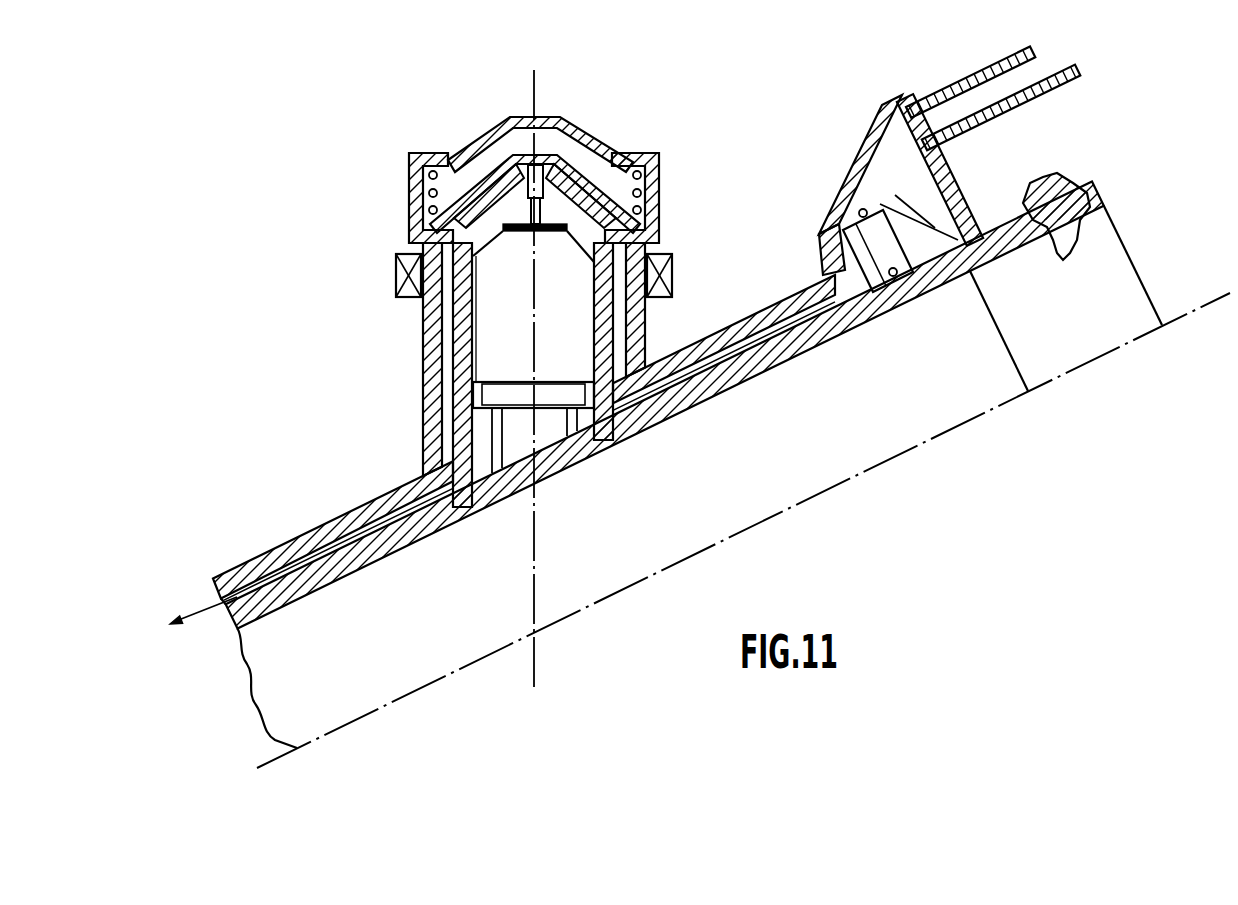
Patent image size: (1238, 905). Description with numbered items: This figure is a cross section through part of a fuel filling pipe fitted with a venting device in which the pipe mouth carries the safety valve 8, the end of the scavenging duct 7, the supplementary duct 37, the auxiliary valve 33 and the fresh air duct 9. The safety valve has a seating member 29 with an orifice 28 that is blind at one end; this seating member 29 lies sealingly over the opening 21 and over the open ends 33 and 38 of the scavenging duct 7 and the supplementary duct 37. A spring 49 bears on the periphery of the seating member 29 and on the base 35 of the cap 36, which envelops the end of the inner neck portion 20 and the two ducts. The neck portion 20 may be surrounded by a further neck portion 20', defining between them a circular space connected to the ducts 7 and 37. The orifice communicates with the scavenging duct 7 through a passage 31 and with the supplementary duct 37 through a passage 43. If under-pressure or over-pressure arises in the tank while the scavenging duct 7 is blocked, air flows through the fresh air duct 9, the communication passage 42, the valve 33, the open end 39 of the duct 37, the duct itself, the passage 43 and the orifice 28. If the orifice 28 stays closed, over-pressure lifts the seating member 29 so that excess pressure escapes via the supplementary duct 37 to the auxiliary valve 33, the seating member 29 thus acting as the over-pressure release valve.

The scavenging duct 7 is at (323, 522).
The safety valve 8 is at (662, 334).
The fresh air duct 9 is at (988, 62).
The inner neck portion 20 is at (619, 375).
The further neck portion 20' is at (619, 375).
The opening 21 is at (488, 262).
The orifice 28 is at (540, 178).
The seating member 29 is at (603, 165).
The passage 31 is at (412, 229).
The auxiliary valve 33 is at (413, 277).
The base of the cap 35 is at (470, 165).
The cap 36 is at (619, 344).
The supplementary duct 37 is at (758, 305).
The open end of the supplementary duct 38 is at (658, 240).
The open end of the duct 39 is at (848, 307).
The communication passage 42 is at (619, 375).
The passage 43 is at (604, 212).
The spring 49 is at (447, 153).